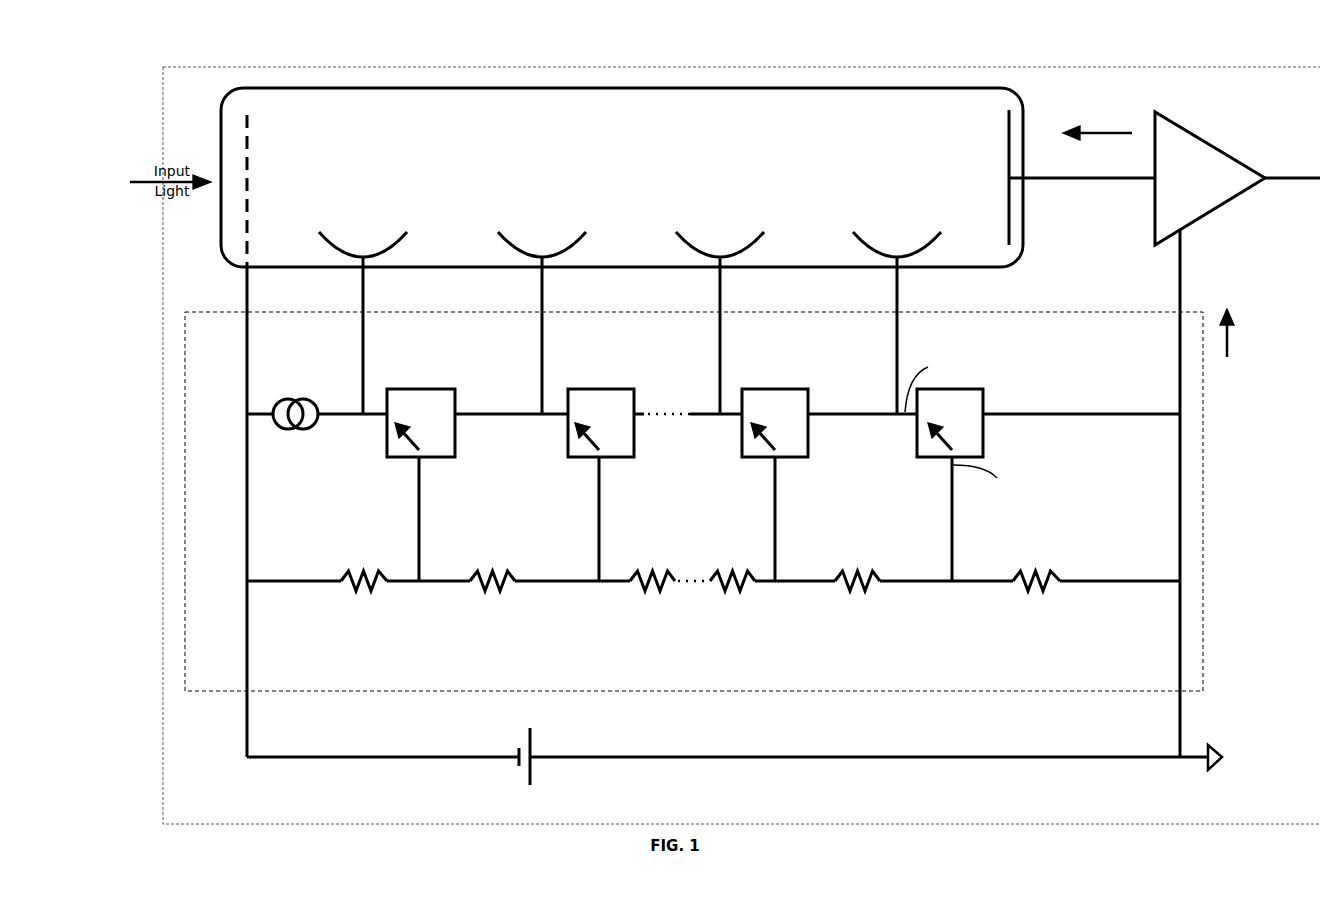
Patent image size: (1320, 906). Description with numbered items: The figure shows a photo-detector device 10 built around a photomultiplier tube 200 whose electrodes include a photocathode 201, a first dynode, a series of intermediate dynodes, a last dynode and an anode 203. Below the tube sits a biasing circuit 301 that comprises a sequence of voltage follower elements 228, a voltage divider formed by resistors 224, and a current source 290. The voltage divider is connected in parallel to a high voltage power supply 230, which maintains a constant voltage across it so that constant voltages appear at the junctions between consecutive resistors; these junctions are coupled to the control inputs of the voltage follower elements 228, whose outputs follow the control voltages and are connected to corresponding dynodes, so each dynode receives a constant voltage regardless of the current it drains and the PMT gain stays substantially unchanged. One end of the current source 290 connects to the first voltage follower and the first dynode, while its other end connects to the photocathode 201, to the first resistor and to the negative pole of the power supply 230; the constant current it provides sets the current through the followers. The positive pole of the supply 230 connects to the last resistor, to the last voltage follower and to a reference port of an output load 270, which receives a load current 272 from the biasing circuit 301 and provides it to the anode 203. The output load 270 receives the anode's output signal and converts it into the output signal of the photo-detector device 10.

The photo-detector device 10 is at (665, 67).
The photomultiplier tube 200 is at (1066, 224).
The photocathode 201 is at (249, 142).
The anode 203 is at (1008, 200).
The resistors of voltage divider 224 is at (713, 608).
The voltage follower elements 228 is at (455, 457).
The high voltage power supply 230 is at (734, 753).
The output load 270 is at (1237, 178).
The load current 272 is at (1169, 227).
The current source 290 is at (295, 419).
The biasing circuit 301 is at (1203, 500).